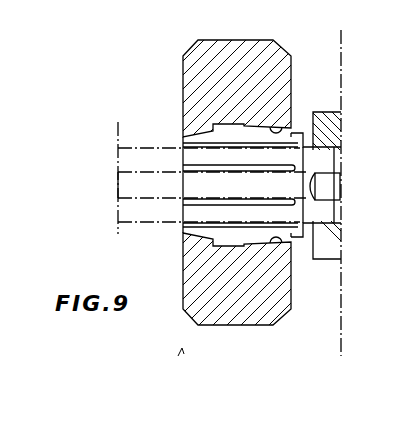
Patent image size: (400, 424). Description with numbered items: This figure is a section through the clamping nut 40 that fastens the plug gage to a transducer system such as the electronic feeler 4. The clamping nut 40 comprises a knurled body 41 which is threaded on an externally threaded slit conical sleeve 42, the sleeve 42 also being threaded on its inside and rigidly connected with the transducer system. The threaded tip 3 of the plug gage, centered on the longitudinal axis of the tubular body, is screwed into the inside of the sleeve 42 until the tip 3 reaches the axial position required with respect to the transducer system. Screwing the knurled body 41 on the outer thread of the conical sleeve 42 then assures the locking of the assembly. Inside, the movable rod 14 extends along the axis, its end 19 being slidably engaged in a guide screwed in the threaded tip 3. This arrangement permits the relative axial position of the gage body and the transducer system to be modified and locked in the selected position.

The threaded tip 3 is at (146, 152).
The electronic feeler 4 is at (324, 112).
The movable rod 14 is at (120, 188).
The end of the rod 19 is at (312, 176).
The clamping nut 40 is at (162, 370).
The knurled body 41 is at (259, 45).
The slit conical sleeve 42 is at (295, 137).